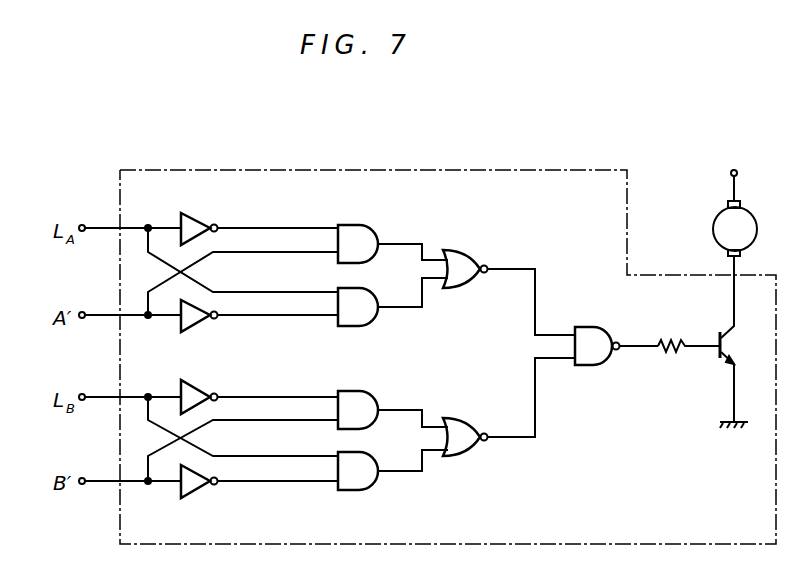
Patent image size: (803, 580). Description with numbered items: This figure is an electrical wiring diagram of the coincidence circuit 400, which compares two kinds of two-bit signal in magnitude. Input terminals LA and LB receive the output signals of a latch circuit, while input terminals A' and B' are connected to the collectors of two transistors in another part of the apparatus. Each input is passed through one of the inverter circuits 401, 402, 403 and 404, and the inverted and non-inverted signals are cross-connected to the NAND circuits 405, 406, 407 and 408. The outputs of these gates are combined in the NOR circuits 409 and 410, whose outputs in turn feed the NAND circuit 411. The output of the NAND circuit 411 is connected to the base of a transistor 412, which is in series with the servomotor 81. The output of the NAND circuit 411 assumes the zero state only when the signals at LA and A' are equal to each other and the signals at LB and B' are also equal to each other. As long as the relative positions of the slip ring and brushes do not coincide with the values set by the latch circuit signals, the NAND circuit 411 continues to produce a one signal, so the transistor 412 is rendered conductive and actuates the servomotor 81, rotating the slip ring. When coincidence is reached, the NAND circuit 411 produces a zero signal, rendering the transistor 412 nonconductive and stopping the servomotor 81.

The coincidence circuit 400 is at (422, 170).
The inverter circuit 401 is at (200, 222).
The inverter circuit 402 is at (201, 321).
The inverter circuit 403 is at (200, 391).
The inverter circuit 404 is at (202, 492).
The NAND circuit 405 is at (364, 225).
The NAND circuit 406 is at (364, 326).
The NAND circuit 407 is at (364, 392).
The NAND circuit 408 is at (364, 490).
The NOR circuit 409 is at (467, 251).
The NOR circuit 410 is at (477, 453).
The NAND circuit 411 is at (587, 327).
The transistor 412 is at (727, 344).
The servomotor 81 is at (714, 218).